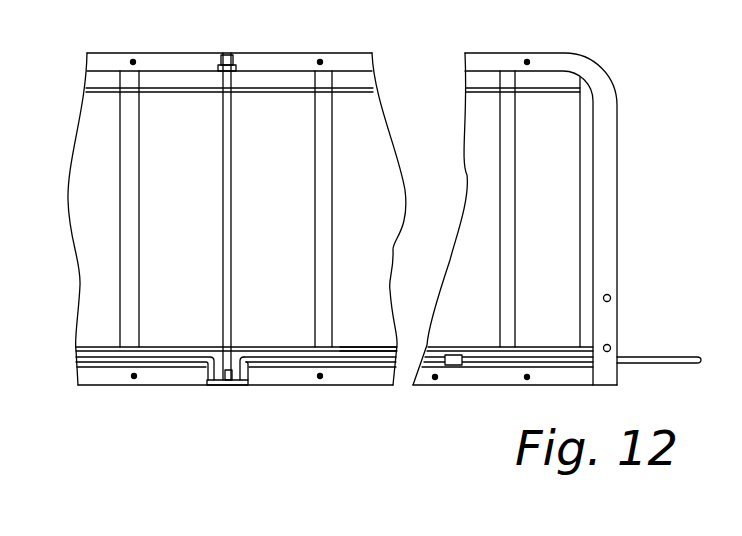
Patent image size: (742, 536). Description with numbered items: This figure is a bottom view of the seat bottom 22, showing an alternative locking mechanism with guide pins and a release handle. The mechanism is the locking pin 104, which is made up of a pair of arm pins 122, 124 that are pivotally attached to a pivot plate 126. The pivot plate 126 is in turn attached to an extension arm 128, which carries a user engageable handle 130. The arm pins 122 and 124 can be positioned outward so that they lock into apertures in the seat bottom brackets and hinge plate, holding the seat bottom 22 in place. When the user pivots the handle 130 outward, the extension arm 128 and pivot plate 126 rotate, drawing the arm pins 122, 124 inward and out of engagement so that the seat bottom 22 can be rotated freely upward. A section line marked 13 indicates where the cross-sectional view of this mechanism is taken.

The seat bottom 22 is at (553, 186).
The locking pin 104 is at (630, 351).
The arm pin 122 is at (108, 362).
The arm pin 124 is at (350, 357).
The pivot plate 126 is at (223, 385).
The extension arm 128 is at (228, 272).
The user engageable handle 130 is at (232, 63).
The section line 13- 13 is at (280, 405).